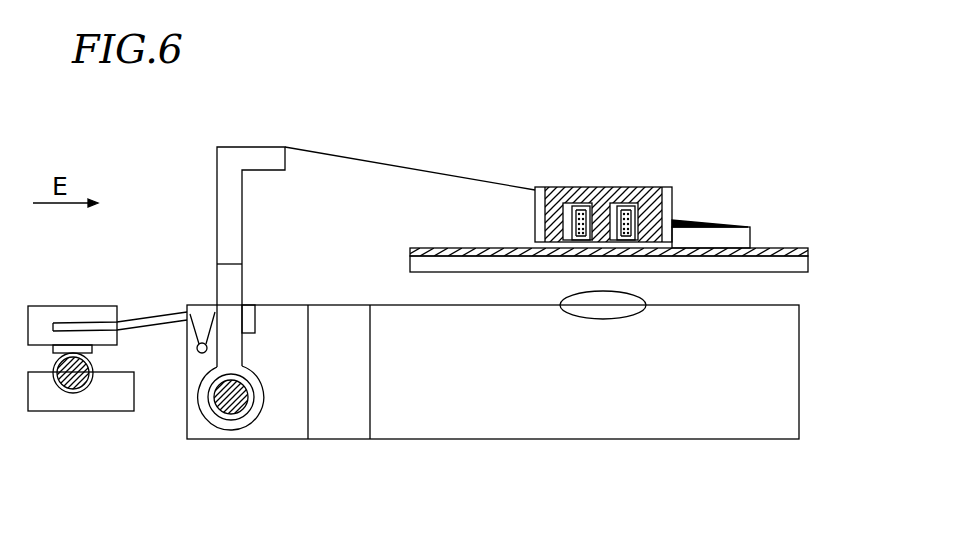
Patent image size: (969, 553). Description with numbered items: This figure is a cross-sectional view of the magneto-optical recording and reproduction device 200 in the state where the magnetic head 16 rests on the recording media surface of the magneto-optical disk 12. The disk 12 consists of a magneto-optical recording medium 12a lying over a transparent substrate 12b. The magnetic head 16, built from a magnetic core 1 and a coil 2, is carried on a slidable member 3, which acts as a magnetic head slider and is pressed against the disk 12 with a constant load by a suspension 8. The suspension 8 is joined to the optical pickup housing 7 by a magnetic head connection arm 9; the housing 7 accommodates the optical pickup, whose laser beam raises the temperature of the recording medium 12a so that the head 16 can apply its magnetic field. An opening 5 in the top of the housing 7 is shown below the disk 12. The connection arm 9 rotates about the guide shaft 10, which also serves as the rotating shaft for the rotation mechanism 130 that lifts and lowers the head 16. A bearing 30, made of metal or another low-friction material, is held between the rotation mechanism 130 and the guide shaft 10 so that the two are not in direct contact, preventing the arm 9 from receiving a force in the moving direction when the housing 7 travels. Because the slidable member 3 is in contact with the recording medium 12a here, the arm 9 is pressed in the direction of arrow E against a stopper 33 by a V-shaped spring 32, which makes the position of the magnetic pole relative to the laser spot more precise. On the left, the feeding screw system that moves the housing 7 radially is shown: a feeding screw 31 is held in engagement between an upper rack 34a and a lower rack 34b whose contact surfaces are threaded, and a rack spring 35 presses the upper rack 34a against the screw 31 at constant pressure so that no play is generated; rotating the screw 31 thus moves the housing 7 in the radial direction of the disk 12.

The magneto-optical recording and reproduction device 200 is at (603, 134).
The magnetic head 16 is at (603, 159).
The magnetic core 1 is at (555, 188).
The coil 2 is at (603, 184).
The slidable member 3 is at (735, 237).
The opening 5 is at (603, 300).
The optical pickup housing 7 is at (419, 417).
The suspension 8 is at (420, 170).
The magnetic head connection arm 9 is at (230, 157).
The guide shaft 10 is at (243, 402).
The magneto-optical disk 12 is at (659, 256).
The magneto-optical recording medium 12a is at (808, 252).
The transparent substrate 12b is at (805, 266).
The bearing 30 is at (214, 410).
The feeding screw 31 is at (66, 393).
The V-shaped spring 32 is at (200, 355).
The stopper 33 is at (250, 310).
The upper rack 34a is at (43, 318).
The lower rack 34b is at (112, 403).
The rack spring 35 is at (147, 317).
The rotation mechanism 130 is at (250, 372).